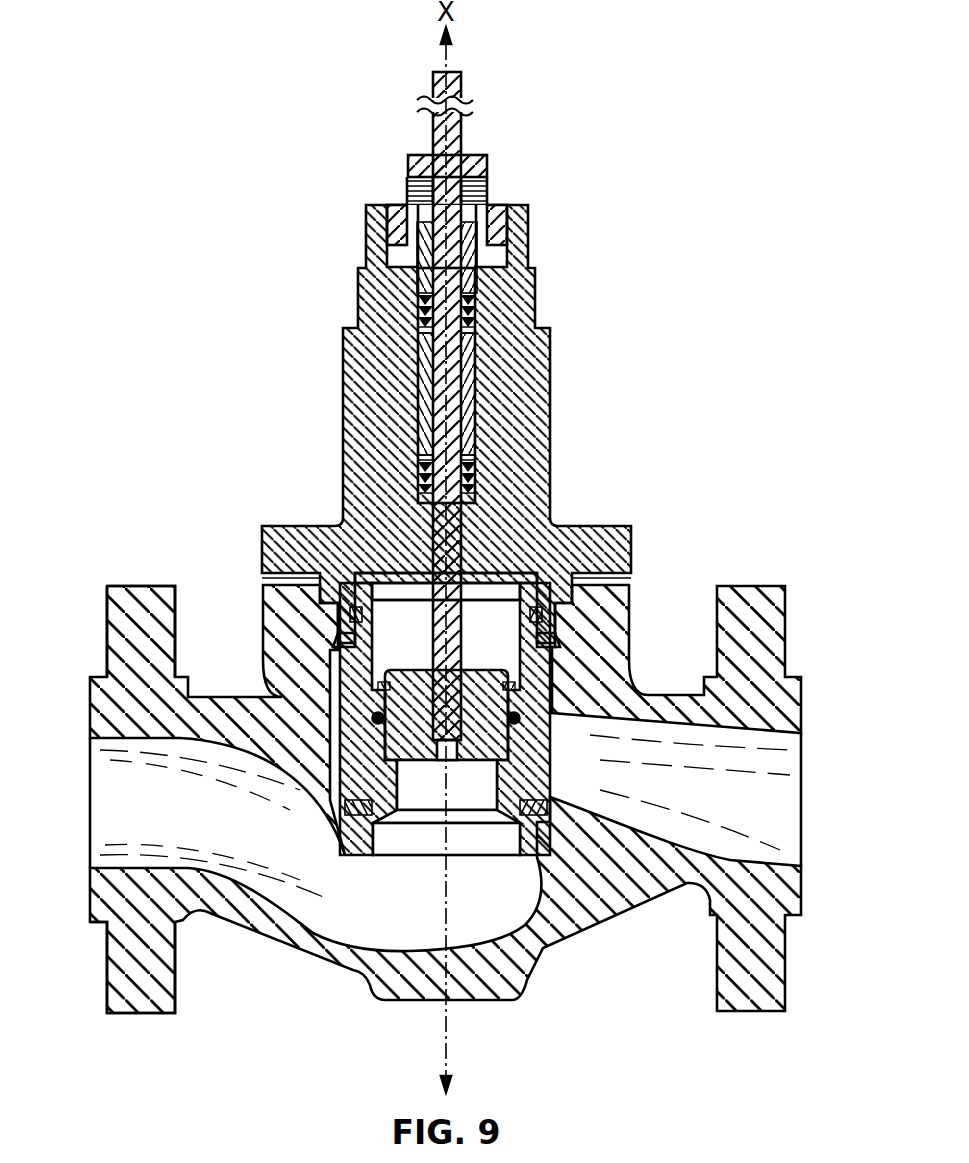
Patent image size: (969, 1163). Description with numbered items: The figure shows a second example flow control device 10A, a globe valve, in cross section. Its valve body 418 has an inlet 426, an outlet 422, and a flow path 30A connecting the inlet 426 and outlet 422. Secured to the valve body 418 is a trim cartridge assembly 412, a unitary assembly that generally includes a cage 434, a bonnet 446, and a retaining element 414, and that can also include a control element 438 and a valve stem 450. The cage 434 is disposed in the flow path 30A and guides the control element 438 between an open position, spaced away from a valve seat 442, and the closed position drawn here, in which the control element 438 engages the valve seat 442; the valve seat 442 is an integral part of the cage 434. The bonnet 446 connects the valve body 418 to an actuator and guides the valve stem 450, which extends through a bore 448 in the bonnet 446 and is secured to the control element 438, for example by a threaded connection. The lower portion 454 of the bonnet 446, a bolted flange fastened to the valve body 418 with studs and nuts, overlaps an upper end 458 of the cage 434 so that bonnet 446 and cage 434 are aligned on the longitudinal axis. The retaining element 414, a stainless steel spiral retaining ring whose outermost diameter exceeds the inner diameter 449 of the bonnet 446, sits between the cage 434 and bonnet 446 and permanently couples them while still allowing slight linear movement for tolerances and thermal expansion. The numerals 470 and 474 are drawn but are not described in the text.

The flow control device 10A is at (182, 103).
The flow path 30A is at (196, 825).
The trim cartridge assembly 412 is at (314, 434).
The retaining element 414 is at (350, 617).
The valve body 418 is at (125, 615).
The outlet 422 is at (108, 801).
The inlet 426 is at (795, 790).
The cage 434 is at (550, 712).
The control element 438 is at (507, 773).
The valve seat 442 is at (370, 803).
The bonnet 446 is at (546, 378).
The bore 448 is at (430, 537).
The inner diameter 449 is at (380, 577).
The valve stem 450 is at (438, 270).
The lower portion 454 is at (590, 523).
The upper end 458 is at (552, 585).
The bonnet hub 470 is at (552, 590).
The gasket 474 is at (280, 613).